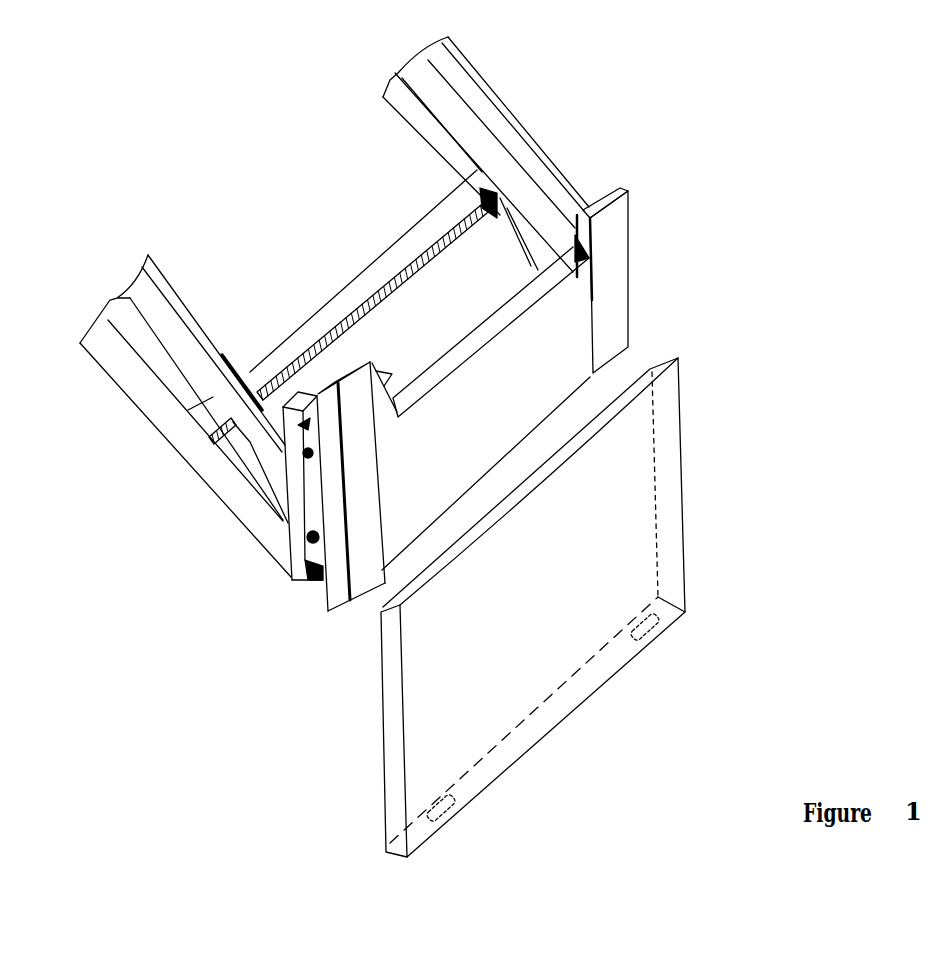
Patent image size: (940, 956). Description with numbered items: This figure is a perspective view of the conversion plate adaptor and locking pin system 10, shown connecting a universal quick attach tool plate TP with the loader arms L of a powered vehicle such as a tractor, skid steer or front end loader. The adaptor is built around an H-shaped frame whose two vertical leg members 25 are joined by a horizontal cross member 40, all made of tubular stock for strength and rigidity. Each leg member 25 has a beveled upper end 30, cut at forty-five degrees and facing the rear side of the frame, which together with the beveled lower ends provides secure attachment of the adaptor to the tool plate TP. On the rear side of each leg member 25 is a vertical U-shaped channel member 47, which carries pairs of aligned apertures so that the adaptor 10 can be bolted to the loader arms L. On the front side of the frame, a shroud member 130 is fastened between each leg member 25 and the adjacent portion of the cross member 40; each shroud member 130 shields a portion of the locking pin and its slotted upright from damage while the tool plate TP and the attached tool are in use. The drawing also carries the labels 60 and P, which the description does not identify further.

The conversion plate adaptor and locking pin system 10 is at (686, 183).
The loader arms L is at (453, 78).
The support rail 60 is at (370, 362).
The horizontal cross member 40 is at (510, 422).
The upper end 30 is at (609, 192).
The vertical leg members 25 is at (620, 281).
The shroud member 130 is at (585, 263).
The U-shaped channel members 47 is at (307, 510).
The universal quick attach tool plate TP is at (683, 480).
The peg slot P is at (653, 630).